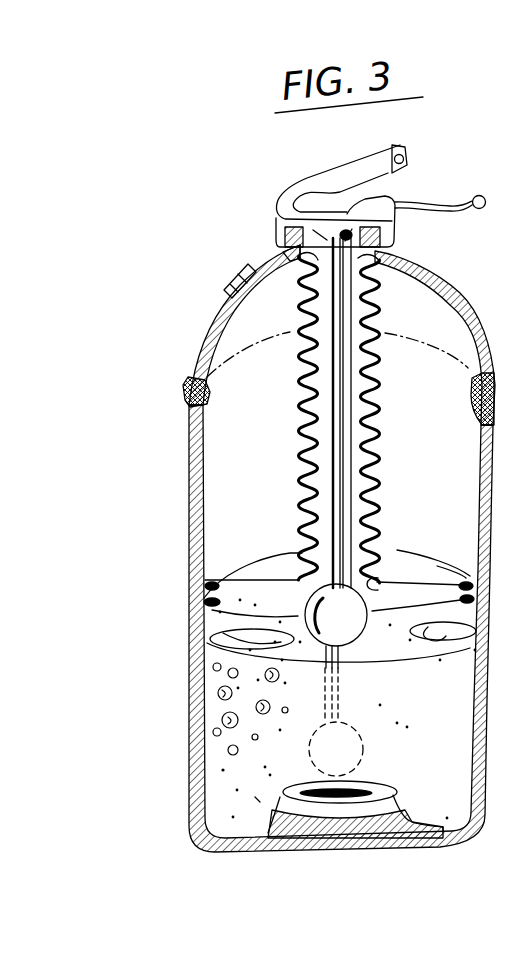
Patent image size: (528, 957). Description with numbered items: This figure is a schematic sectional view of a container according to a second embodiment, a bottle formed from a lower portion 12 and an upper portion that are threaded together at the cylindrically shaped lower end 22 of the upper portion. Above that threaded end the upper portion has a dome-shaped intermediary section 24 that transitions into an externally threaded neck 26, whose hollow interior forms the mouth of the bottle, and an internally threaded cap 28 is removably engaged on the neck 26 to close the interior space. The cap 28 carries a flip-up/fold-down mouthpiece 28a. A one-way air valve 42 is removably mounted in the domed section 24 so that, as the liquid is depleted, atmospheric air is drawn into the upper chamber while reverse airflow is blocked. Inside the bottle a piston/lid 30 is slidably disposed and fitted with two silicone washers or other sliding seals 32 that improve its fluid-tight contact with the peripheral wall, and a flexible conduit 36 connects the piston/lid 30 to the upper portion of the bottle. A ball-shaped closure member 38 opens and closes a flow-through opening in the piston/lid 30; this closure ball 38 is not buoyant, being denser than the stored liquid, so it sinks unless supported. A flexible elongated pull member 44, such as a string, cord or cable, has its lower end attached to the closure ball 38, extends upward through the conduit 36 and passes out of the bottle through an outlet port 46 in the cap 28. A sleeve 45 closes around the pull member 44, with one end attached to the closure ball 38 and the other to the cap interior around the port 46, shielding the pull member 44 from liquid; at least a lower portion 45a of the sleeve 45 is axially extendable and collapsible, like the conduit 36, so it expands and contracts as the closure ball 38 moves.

The lower portion 12 is at (170, 485).
The cylindrically shaped lower end 22 is at (188, 397).
The dome-shaped intermediary section 24 is at (197, 338).
The externally threaded neck 26 is at (290, 250).
The cap 28 is at (303, 188).
The flip-up/fold-down mouthpiece 28a is at (340, 172).
The piston/lid 30 is at (283, 556).
The sliding seals 32 is at (200, 594).
The flexible conduit 36 is at (300, 412).
The closure ball 38 is at (360, 640).
The one-way air valve 42 is at (222, 286).
The flexible elongated pull member 44 is at (333, 437).
The sleeve 45 is at (300, 467).
The lower portion of the sleeve 45a is at (303, 510).
The outlet port 46 is at (396, 223).